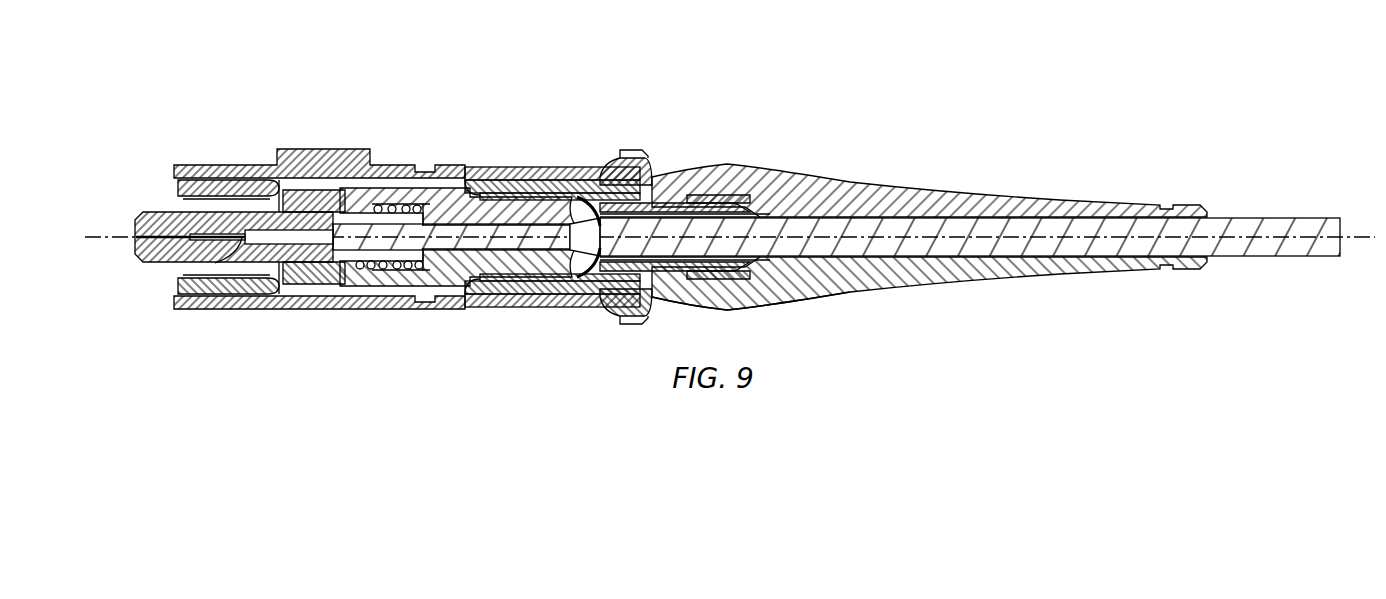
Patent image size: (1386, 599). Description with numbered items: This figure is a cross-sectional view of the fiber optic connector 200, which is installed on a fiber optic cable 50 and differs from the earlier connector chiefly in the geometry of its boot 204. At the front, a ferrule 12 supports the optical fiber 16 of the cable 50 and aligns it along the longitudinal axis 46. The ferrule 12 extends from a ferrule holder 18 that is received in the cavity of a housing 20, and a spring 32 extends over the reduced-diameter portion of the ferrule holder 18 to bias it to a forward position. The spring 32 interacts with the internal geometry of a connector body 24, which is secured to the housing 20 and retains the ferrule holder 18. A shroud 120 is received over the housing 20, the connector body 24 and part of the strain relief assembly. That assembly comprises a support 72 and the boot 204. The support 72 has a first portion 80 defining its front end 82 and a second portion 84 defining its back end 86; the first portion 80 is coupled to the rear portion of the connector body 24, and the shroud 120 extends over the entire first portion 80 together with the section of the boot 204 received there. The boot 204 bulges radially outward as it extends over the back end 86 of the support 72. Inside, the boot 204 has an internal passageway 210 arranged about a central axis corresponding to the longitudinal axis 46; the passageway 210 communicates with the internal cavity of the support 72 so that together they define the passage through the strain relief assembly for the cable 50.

The fiber optic connector 200 is at (312, 105).
The ferrule 12 is at (157, 212).
The longitudinal axis 46 is at (116, 236).
The optical fiber 16 is at (215, 263).
The housing 20 is at (206, 181).
The shroud 120 is at (244, 165).
The ferrule holder 18 is at (302, 284).
The spring 32 is at (388, 272).
The connector body 24 is at (430, 290).
The front end of support 82 is at (463, 185).
The first portion of support 80 is at (593, 290).
The support 72 is at (587, 196).
The second portion of support 84 is at (612, 272).
The back end of support 86 is at (752, 202).
The boot 204 is at (980, 198).
The internal passageway 210 is at (777, 262).
The fiber optic cable 50 is at (1267, 270).